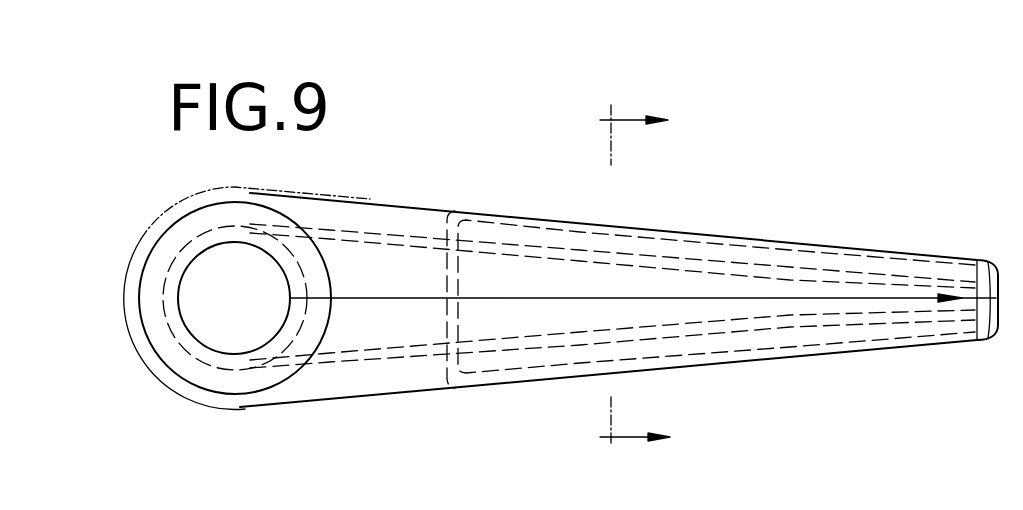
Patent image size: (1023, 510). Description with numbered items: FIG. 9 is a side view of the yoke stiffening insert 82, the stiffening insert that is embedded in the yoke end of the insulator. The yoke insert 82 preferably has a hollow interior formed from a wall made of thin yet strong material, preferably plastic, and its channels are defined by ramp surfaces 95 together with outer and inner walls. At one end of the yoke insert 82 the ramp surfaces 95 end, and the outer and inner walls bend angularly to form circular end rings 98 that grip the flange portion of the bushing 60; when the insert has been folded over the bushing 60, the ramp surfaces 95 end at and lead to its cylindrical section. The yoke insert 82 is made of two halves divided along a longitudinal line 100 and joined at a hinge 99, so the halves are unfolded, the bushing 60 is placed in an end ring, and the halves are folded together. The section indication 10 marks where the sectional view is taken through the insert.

The section line 10- 10 is at (625, 278).
The bushing 60 is at (250, 198).
The yoke stiffening insert 82 is at (485, 184).
The ramp surfaces 95 is at (362, 228).
The circular end rings 98 is at (172, 222).
The hinge 99 is at (122, 298).
The longitudinal line 100 is at (549, 298).